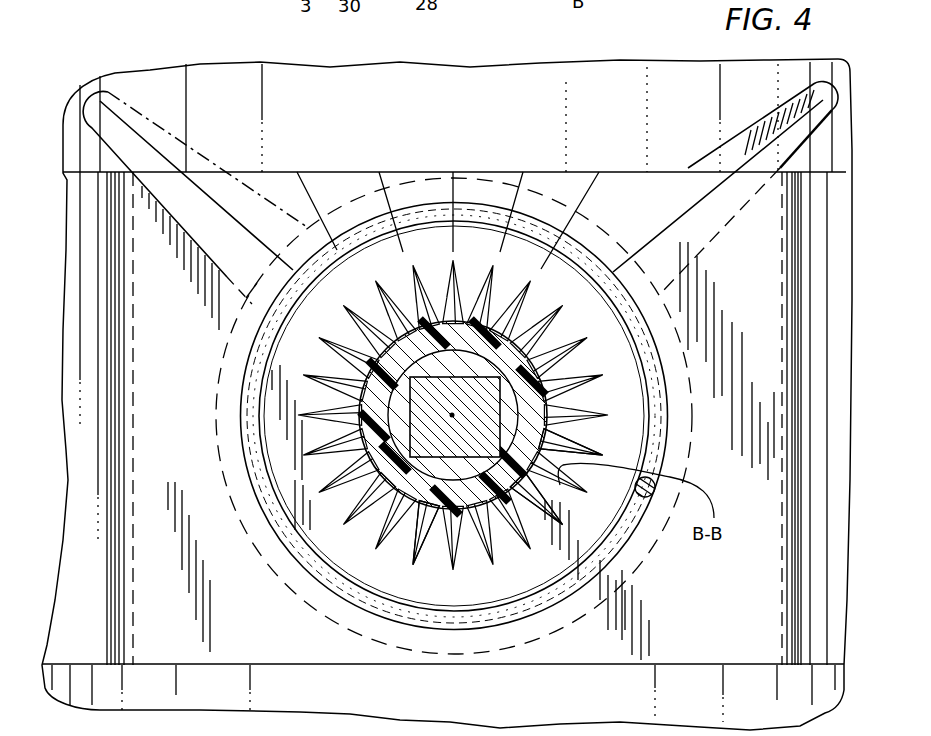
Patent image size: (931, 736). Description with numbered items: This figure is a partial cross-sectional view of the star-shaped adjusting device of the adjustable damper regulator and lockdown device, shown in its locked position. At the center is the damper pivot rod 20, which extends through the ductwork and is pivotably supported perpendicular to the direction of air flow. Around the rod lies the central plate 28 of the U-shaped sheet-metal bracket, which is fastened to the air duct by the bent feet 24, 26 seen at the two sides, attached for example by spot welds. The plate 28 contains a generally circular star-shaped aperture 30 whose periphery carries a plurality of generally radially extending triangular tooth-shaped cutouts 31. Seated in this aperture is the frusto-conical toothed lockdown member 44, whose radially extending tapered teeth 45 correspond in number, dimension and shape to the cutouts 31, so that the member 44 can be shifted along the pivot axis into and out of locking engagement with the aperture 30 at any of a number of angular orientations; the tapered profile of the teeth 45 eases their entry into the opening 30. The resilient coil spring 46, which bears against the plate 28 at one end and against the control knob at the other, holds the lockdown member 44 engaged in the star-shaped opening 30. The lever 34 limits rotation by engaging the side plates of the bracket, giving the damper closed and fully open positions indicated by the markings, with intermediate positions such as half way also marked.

The damper pivot rod 20 is at (346, 394).
The bent foot 24 is at (80, 558).
The bent foot 26 is at (826, 272).
The central section/plate 28 is at (447, 394).
The star-shaped aperture 30 is at (573, 373).
The tooth shaped cutout 31 is at (553, 481).
The lever 34 is at (125, 101).
The frusto-conical toothed lockdown member 44 is at (581, 440).
The tapered tooth 45 is at (424, 508).
The resilient coil spring 46 is at (375, 237).